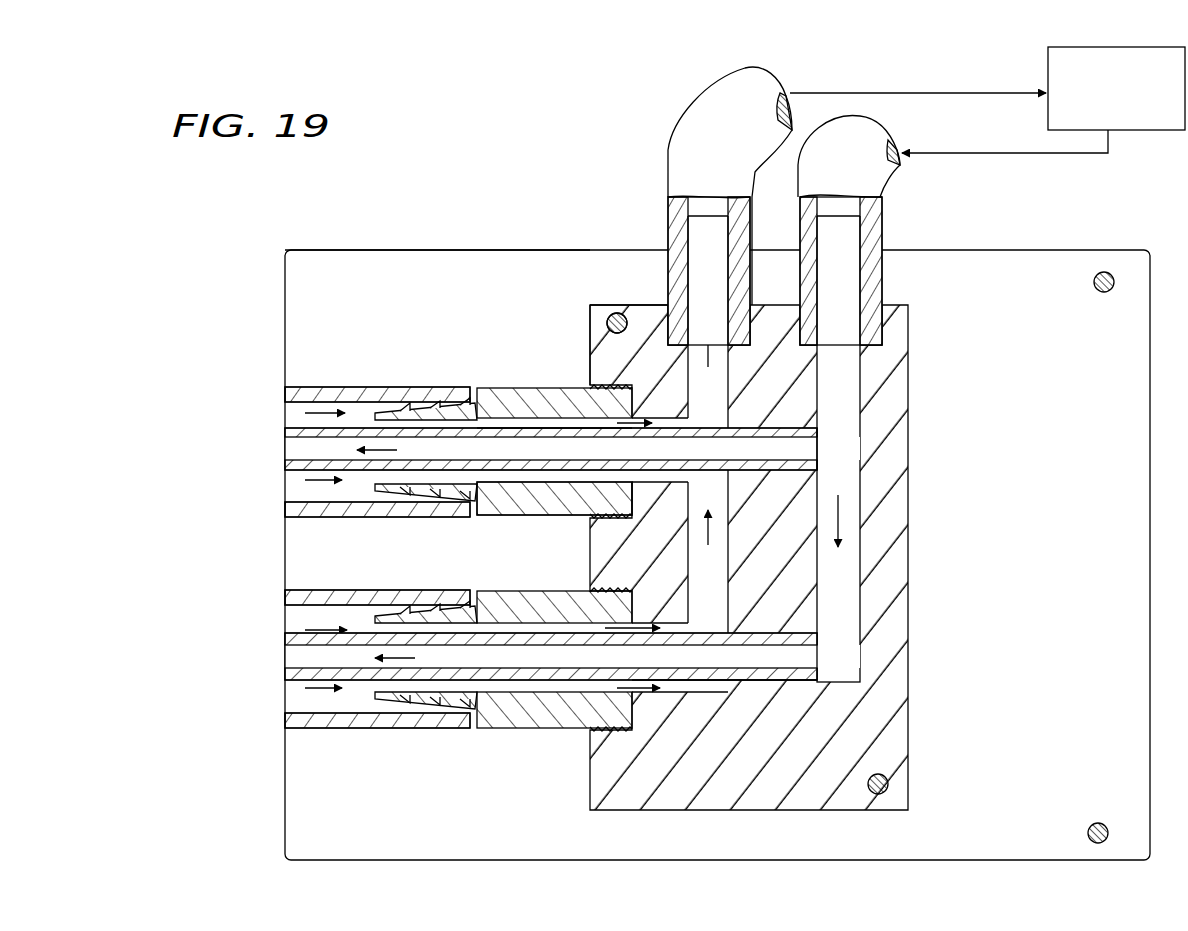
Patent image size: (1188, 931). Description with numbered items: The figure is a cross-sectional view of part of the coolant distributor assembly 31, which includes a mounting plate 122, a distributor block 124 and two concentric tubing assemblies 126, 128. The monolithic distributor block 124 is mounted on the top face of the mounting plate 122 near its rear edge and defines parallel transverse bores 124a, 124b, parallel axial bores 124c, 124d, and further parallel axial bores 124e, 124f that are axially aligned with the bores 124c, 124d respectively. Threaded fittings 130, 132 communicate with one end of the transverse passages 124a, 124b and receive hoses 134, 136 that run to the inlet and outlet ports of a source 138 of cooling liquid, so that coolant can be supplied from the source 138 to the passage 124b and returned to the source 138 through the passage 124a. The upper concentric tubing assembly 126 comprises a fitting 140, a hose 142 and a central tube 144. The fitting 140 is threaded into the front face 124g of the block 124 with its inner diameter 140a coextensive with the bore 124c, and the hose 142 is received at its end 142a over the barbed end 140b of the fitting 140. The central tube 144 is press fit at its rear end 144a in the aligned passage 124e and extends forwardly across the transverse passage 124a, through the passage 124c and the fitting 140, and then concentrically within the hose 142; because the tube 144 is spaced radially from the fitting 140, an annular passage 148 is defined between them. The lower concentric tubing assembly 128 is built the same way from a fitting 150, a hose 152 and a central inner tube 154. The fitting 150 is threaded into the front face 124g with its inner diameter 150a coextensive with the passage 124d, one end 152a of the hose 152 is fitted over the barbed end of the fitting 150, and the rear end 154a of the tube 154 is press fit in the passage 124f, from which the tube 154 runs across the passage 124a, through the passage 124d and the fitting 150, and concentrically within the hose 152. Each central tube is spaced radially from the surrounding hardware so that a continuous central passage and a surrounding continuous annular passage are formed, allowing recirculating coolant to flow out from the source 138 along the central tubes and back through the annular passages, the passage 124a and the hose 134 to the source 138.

The coolant distributor assembly 31 is at (455, 279).
The mounting plate 122 is at (305, 866).
The distributor block 124 is at (668, 810).
The transverse bore 124a is at (720, 608).
The transverse bore 124b is at (860, 562).
The axial bore 124c is at (690, 421).
The axial bore 124d is at (668, 625).
The axial bore 124e is at (817, 452).
The axial bore 124f is at (810, 648).
The front face 124g is at (590, 312).
The concentric tubing assembly 126 is at (312, 503).
The concentric tubing assembly 128 is at (310, 733).
The threaded fitting 130 is at (668, 268).
The threaded fitting 132 is at (895, 277).
The hose 134 is at (697, 117).
The hose 136 is at (900, 175).
The source of cooling liquid 138 is at (1160, 98).
The fitting 140 is at (490, 388).
The inner diameter 140a is at (538, 425).
The barbed end 140b is at (387, 412).
The hose 142 is at (385, 384).
The hose end 142a is at (413, 388).
The central tube 144 is at (713, 472).
The rear end 144a is at (817, 452).
The annular passage 148 is at (567, 478).
The fitting 150 is at (507, 736).
The inner diameter 150a is at (387, 614).
The hose 152 is at (382, 730).
The hose end 152a is at (420, 605).
The central inner tube 154 is at (503, 660).
The rear end 154a is at (776, 696).